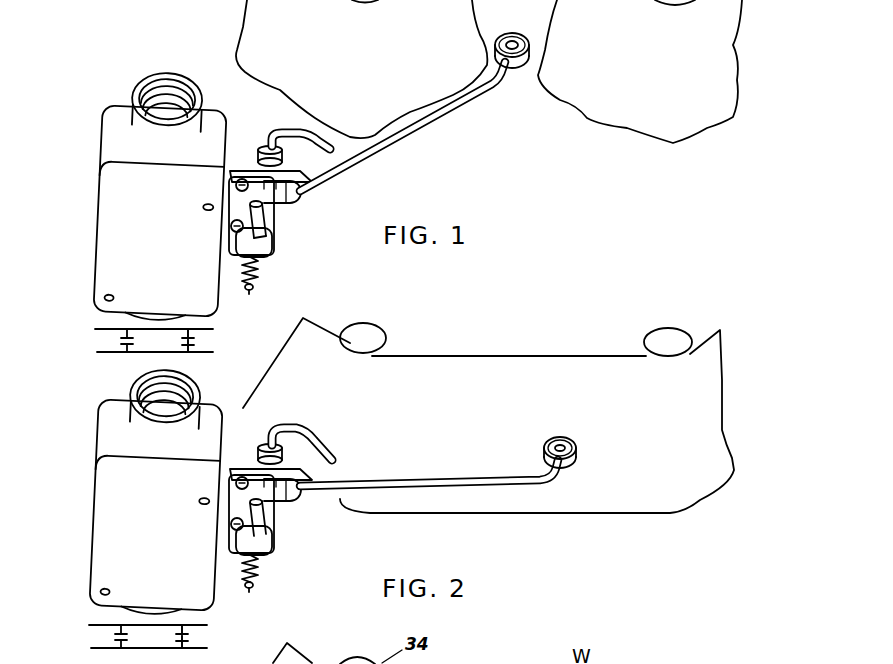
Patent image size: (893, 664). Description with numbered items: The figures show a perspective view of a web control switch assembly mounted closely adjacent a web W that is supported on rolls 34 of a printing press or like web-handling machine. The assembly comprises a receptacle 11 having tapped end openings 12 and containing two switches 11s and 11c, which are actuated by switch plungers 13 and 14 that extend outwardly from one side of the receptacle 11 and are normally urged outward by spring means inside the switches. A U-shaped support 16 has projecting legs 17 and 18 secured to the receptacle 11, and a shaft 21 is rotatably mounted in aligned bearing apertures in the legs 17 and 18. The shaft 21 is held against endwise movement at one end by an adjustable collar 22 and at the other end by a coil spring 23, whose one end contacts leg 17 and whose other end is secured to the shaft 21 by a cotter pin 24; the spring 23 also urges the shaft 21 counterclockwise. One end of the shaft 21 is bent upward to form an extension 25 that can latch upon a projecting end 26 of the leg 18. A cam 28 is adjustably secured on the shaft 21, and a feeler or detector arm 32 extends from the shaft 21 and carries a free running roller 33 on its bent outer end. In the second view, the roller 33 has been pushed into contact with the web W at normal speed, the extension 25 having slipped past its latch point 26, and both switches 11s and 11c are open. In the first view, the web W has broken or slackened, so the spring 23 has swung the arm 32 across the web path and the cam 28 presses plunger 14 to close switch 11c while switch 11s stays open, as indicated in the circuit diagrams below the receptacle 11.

In FIG. 1, the receptacle 11 is at (122, 215).
In FIG. 2, the receptacle 11 is at (114, 500).
In FIG. 1, the switch 11s is at (121, 353).
In FIG. 2, the switch 11s is at (120, 627).
In FIG. 1, the switch 11c is at (190, 353).
In FIG. 2, the switch 11c is at (190, 645).
In FIG. 1, the tapped end opening 12 is at (138, 96).
In FIG. 2, the tapped end opening 12 is at (136, 397).
In FIG. 1, the switch plunger 13 is at (242, 179).
In FIG. 2, the switch plunger 13 is at (236, 482).
In FIG. 1, the switch plunger 14 is at (236, 232).
In FIG. 2, the switch plunger 14 is at (232, 520).
In FIG. 1, the U-shaped support 16 is at (272, 252).
In FIG. 2, the U-shaped support 16 is at (251, 514).
In FIG. 1, the leg 17 is at (272, 240).
In FIG. 2, the leg 17 is at (272, 548).
In FIG. 1, the leg 18 is at (290, 172).
In FIG. 2, the leg 18 is at (247, 445).
In FIG. 1, the shaft 21 is at (230, 242).
In FIG. 2, the shaft 21 is at (262, 536).
In FIG. 1, the adjustable collar 22 is at (270, 147).
In FIG. 2, the adjustable collar 22 is at (270, 445).
In FIG. 1, the coil spring 23 is at (260, 270).
In FIG. 2, the coil spring 23 is at (262, 570).
In FIG. 1, the cotter pin 24 is at (252, 288).
In FIG. 2, the cotter pin 24 is at (254, 586).
In FIG. 1, the extension 25 is at (302, 137).
In FIG. 2, the extension 25 is at (312, 438).
In FIG. 1, the projecting end 26 is at (286, 160).
In FIG. 2, the projecting end 26 is at (282, 490).
In FIG. 1, the cam 28 is at (260, 226).
In FIG. 1, the feeler or detector arm 32 is at (380, 132).
In FIG. 2, the feeler or detector arm 32 is at (413, 490).
In FIG. 1, the free running roller 33 is at (524, 46).
In FIG. 2, the free running roller 33 is at (576, 452).
In FIG. 2, the roll 34 is at (372, 335).
In FIG. 1, the web W is at (634, 110).
In FIG. 2, the web W is at (528, 370).